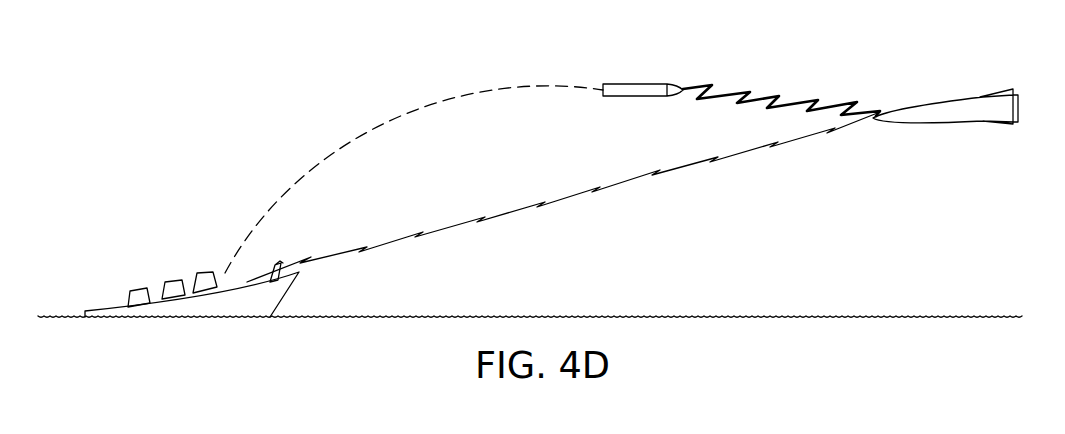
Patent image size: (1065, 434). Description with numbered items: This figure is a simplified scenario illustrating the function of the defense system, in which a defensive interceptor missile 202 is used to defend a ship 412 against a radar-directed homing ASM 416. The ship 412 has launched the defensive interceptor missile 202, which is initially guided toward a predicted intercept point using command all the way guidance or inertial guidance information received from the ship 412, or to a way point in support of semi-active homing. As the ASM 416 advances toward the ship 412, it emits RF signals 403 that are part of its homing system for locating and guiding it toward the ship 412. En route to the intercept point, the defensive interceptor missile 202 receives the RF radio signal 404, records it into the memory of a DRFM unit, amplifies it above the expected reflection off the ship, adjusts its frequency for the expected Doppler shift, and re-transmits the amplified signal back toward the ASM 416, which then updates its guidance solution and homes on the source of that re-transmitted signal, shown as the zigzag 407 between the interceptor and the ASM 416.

The ship 412 is at (155, 290).
The RF signals 403 is at (182, 297).
The RF radar signals 404 is at (563, 197).
The zigzag tether portion 407 is at (768, 95).
The defensive interceptor missile 202 is at (638, 83).
The radar-directed homing ASM 416 is at (950, 97).